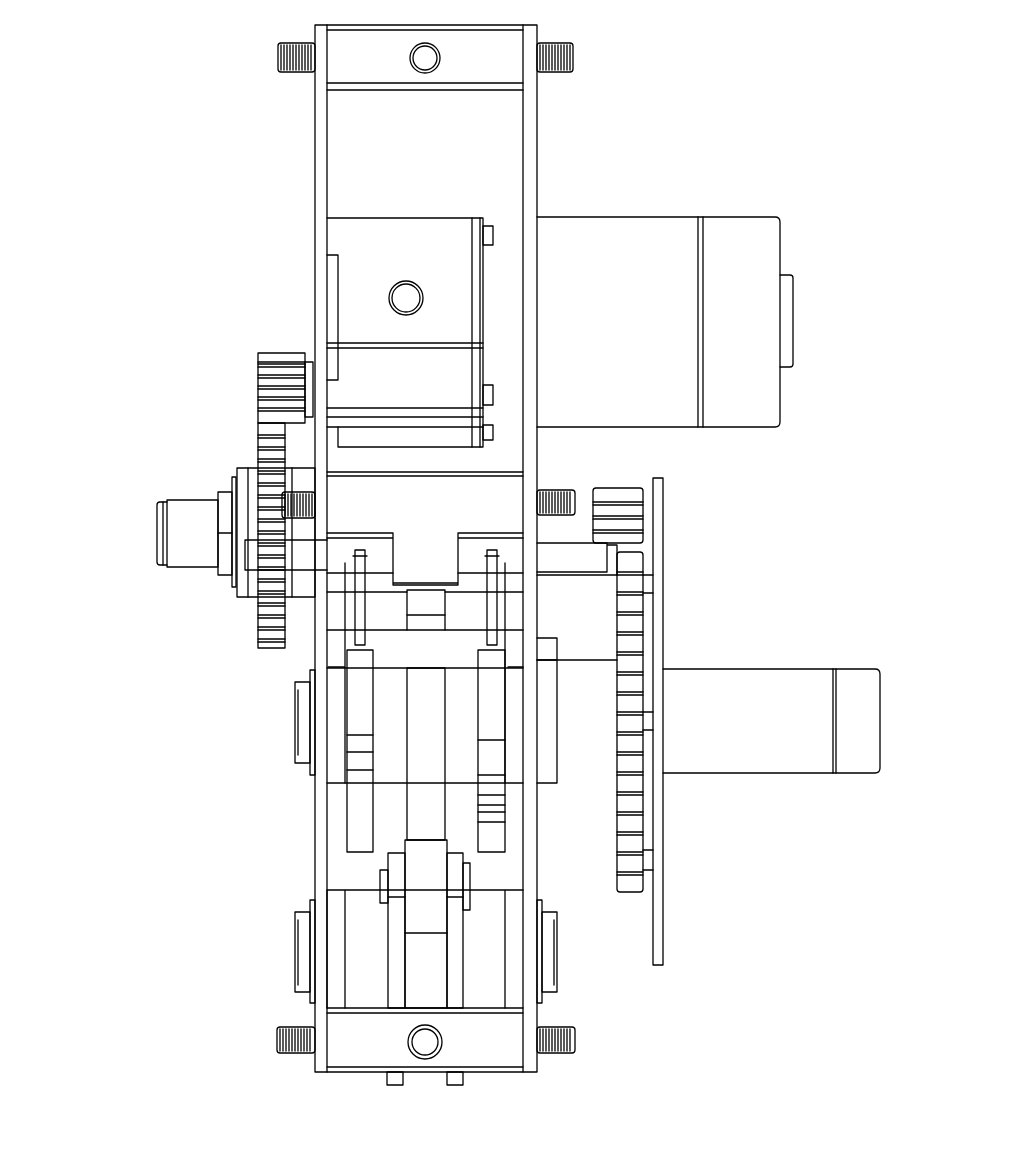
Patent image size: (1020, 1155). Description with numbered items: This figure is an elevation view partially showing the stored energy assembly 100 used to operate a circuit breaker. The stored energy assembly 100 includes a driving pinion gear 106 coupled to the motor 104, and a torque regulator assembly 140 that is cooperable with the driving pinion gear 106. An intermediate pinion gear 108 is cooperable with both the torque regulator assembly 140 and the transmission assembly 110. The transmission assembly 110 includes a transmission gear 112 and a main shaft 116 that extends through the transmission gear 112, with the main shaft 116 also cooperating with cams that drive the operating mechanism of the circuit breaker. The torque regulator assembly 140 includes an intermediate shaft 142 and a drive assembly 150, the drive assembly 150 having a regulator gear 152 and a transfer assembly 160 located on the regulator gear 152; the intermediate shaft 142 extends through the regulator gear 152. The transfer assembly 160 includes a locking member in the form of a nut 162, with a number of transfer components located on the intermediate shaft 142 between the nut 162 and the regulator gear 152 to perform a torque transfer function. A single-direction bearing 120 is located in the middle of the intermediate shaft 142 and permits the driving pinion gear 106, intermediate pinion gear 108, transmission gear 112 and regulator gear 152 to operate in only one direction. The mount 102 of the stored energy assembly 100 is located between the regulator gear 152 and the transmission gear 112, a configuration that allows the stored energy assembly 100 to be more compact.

The stored energy assembly 100 is at (150, 812).
The mount 102 is at (556, 169).
The motor 104 is at (733, 210).
The driving pinion gear 106 is at (278, 355).
The intermediate pinion gear 108 is at (615, 490).
The transmission assembly 110 is at (604, 1055).
The transmission gear 112 is at (622, 890).
The main shaft 116 is at (748, 668).
The single-direction bearing 120 is at (129, 561).
The torque regulator assembly 140 is at (149, 661).
The intermediate shaft 142 is at (156, 520).
The drive assembly 150 is at (156, 579).
The regulator gear 152 is at (257, 622).
The transfer assembly 160 is at (201, 574).
The nut 162 is at (222, 494).